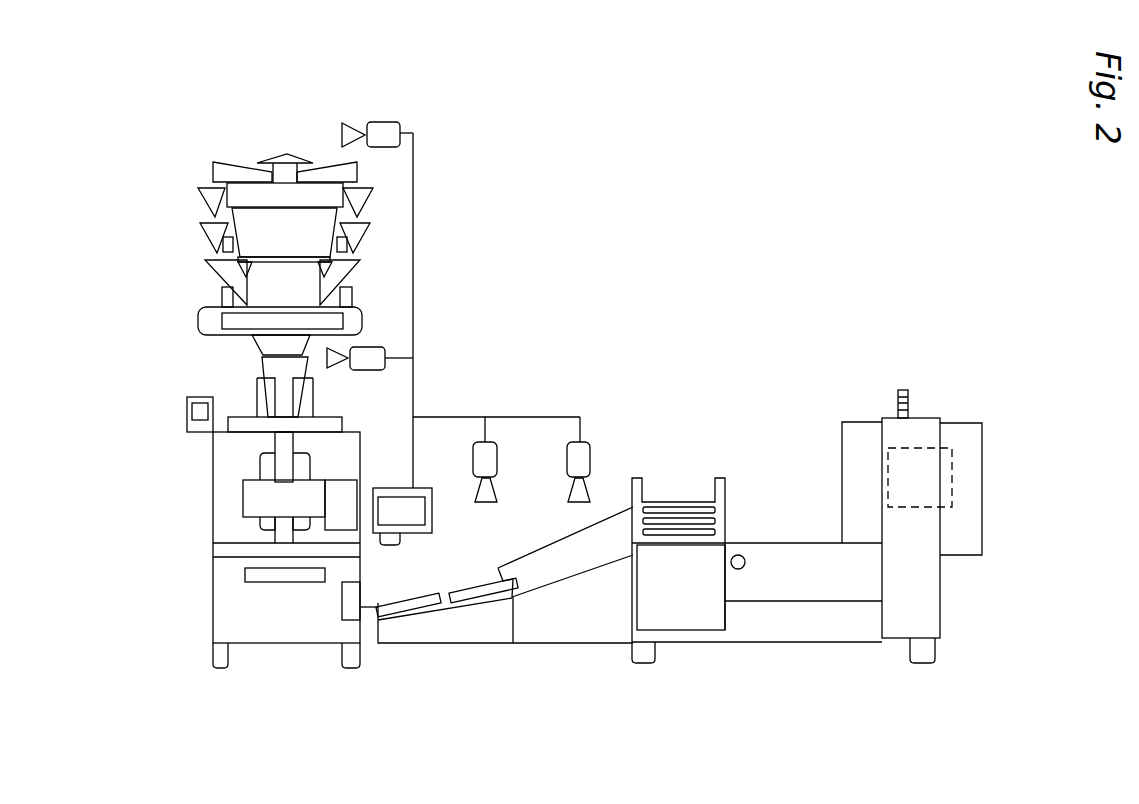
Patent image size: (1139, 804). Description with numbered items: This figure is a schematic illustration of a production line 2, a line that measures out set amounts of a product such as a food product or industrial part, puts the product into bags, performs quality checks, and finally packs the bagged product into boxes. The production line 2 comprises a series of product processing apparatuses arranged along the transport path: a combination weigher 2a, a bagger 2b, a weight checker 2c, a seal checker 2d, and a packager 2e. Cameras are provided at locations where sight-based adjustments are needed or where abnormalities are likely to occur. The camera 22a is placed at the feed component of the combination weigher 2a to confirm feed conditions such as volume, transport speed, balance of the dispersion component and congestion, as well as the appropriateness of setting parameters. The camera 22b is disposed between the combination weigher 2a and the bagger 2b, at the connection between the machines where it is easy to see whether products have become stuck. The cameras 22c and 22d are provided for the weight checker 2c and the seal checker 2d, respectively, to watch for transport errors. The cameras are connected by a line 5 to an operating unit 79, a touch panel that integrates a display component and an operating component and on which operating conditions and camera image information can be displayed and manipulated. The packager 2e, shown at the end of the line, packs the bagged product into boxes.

The production line 2 is at (645, 190).
The combination weigher 2a is at (135, 213).
The bagger 2b is at (143, 494).
The weight checker 2c is at (476, 663).
The seal checker 2d is at (600, 666).
The packager 2e is at (782, 452).
The signal line 5 is at (415, 217).
The camera 22a is at (385, 122).
The camera 22b is at (377, 347).
The camera 22c is at (473, 458).
The camera 22d is at (567, 458).
The operating unit 79 is at (432, 513).